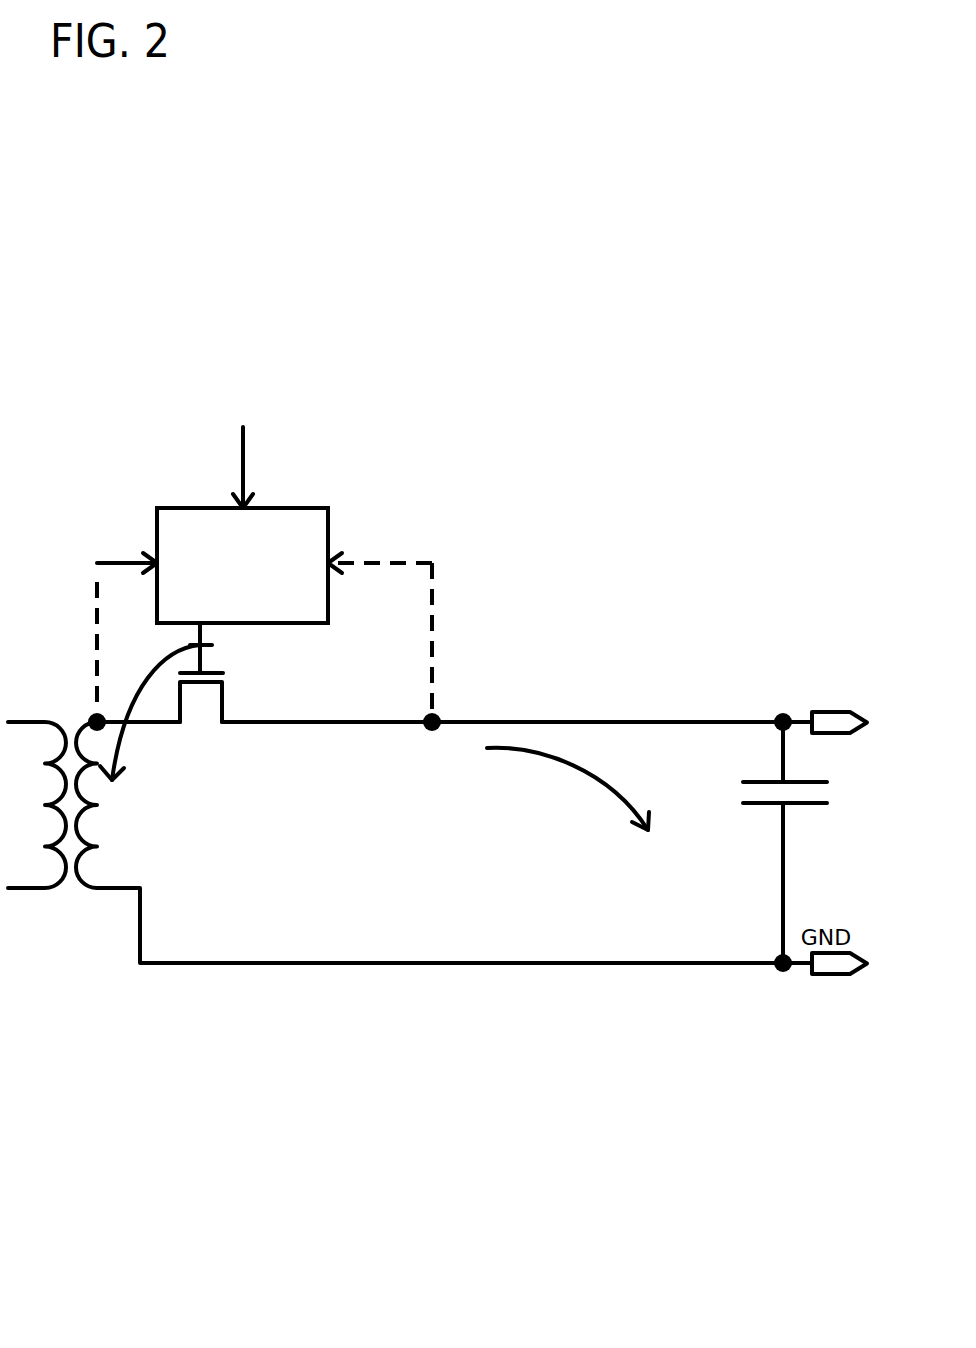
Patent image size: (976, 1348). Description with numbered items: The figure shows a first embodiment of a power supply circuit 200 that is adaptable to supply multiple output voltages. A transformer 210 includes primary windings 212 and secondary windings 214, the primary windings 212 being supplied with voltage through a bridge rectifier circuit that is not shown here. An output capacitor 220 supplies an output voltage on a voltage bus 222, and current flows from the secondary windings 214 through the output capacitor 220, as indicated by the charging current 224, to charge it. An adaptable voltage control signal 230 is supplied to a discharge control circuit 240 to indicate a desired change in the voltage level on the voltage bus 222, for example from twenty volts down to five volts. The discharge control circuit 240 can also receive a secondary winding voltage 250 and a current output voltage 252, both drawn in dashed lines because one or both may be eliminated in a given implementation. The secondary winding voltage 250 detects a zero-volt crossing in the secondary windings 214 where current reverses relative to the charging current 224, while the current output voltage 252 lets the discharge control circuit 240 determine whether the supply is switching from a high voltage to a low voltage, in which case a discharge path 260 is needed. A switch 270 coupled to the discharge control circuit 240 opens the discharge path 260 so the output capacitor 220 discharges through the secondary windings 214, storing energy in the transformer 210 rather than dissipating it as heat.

The power supply circuit 200 is at (272, 322).
The transformer 210 is at (75, 996).
The primary windings 212 is at (30, 888).
The secondary windings 214 is at (109, 857).
The output capacitor 220 is at (755, 807).
The voltage bus 222 is at (825, 695).
The charging current 224 is at (556, 801).
The adaptable voltage control signal 230 is at (307, 441).
The discharge control circuit 240 is at (328, 516).
The secondary winding voltage 250 is at (83, 604).
The current output voltage 252 is at (439, 632).
The discharge path 260 is at (173, 756).
The switch 270 is at (222, 682).